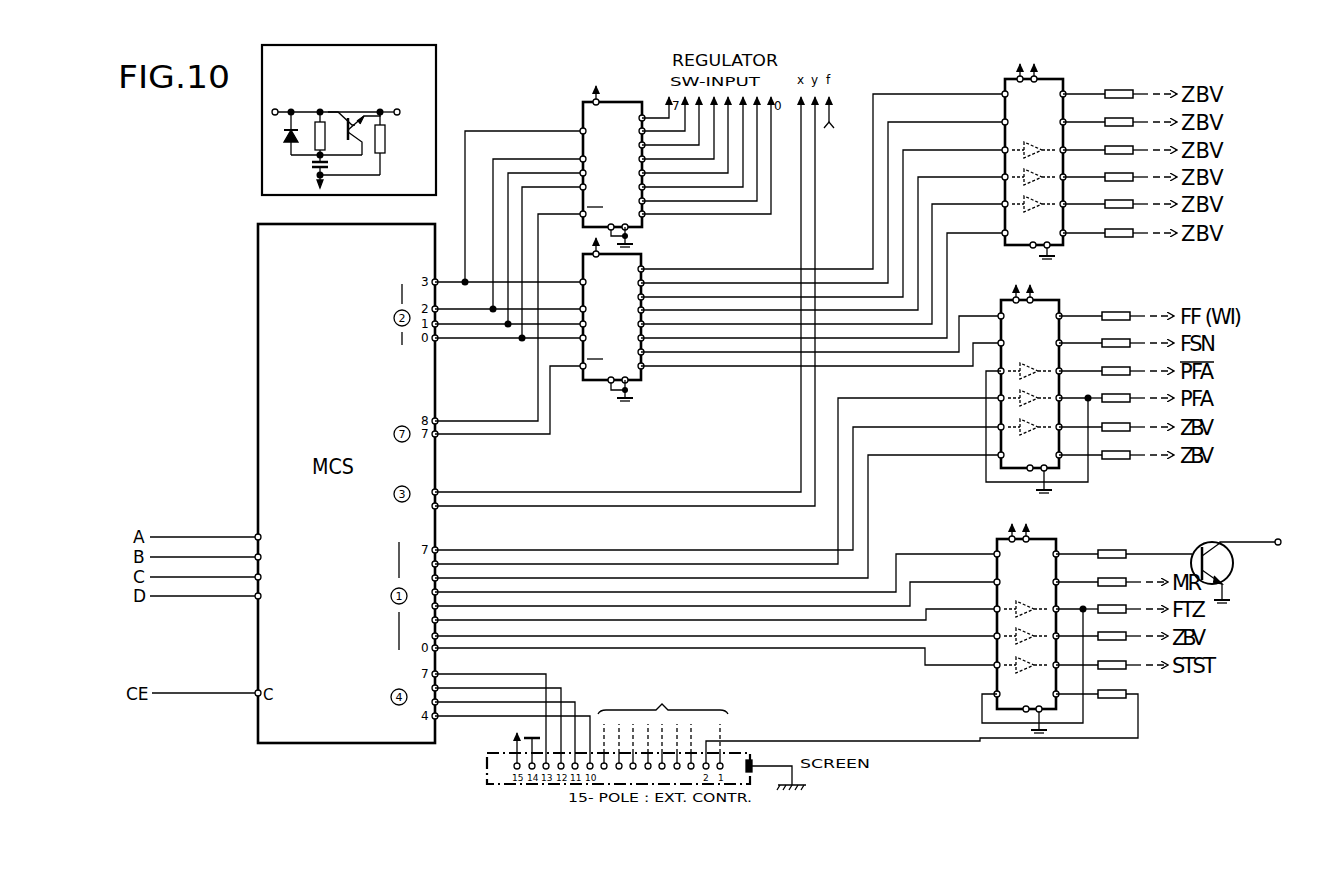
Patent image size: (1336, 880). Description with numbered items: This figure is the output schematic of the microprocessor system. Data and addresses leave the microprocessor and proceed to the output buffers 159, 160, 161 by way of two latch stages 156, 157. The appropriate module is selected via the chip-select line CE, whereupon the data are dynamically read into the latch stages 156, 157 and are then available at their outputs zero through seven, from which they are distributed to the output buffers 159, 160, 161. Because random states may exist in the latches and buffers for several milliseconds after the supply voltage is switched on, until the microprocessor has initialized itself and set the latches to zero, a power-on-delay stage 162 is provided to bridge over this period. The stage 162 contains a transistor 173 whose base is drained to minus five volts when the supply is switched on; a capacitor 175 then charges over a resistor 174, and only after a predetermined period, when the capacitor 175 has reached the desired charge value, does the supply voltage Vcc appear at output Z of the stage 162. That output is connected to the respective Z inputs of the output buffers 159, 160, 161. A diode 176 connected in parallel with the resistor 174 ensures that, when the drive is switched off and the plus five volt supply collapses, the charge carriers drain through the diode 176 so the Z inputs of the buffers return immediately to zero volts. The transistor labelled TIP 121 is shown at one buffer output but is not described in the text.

The latch stage 156 is at (583, 117).
The latch stage 157 is at (633, 257).
The output buffer 159 is at (1065, 86).
The output buffer 160 is at (1060, 306).
The output buffer 161 is at (1050, 545).
The power-on-delay stage 162 is at (373, 120).
The transistor 173 is at (354, 116).
The resistor 174 is at (307, 116).
The capacitor 175 is at (300, 174).
The diode 176 is at (282, 139).
The TIP 121 power transistor 121 is at (1208, 542).